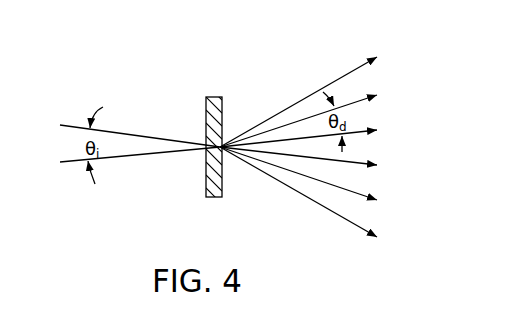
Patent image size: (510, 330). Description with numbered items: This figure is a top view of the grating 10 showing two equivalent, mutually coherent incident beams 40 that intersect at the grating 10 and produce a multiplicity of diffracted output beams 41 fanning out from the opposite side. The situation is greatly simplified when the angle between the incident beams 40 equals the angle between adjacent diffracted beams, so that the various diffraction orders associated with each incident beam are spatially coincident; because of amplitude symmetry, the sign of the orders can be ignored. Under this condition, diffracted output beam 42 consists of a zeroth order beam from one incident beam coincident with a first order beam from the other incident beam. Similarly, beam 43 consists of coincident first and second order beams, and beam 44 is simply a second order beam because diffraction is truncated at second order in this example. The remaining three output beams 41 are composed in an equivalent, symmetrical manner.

The grating 10 is at (215, 97).
The incident beams 40 is at (130, 85).
The output beams 41 is at (290, 78).
The diffracted output beam 42 is at (357, 131).
The beam 43 is at (350, 103).
The beam 44 is at (330, 84).